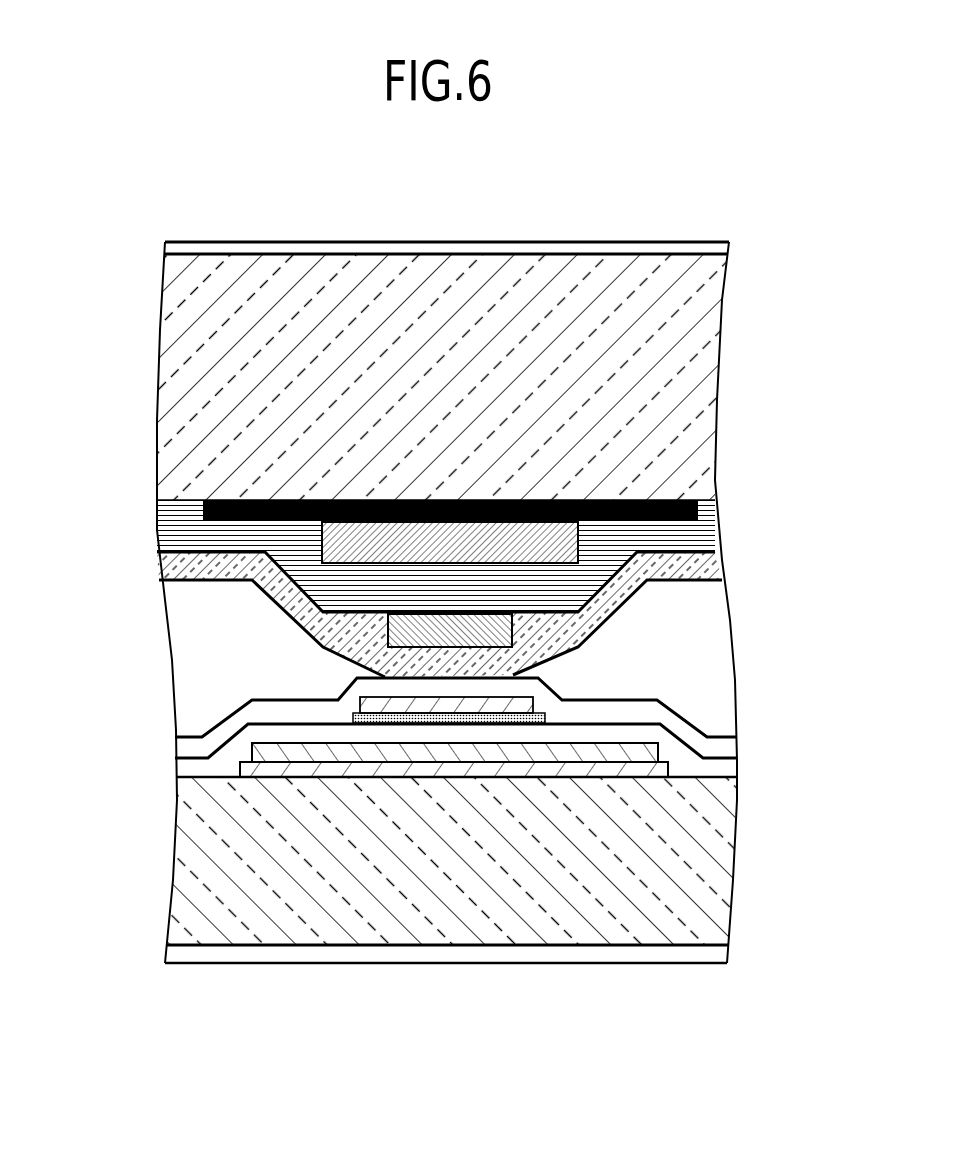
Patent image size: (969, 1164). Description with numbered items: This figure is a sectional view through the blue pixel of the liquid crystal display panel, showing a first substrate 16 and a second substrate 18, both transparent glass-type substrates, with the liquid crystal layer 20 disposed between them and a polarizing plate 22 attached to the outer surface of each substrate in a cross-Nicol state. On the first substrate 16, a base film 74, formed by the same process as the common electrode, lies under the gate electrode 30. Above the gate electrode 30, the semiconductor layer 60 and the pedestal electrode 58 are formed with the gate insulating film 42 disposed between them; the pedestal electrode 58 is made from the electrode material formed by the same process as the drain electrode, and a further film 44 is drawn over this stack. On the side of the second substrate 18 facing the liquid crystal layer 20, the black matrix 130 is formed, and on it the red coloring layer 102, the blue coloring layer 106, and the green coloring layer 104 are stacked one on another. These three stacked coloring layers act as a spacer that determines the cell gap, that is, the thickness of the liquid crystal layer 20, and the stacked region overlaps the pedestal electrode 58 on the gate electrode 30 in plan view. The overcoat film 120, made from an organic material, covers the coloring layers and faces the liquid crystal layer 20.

The first substrate 16 is at (705, 858).
The second substrate 18 is at (491, 268).
The liquid crystal layer 20 is at (710, 655).
The polarizing plate 22 is at (376, 248).
The gate electrode 30 is at (345, 752).
The gate insulating film 42 is at (540, 735).
The passivation layer 44 is at (615, 710).
The pedestal electrode 58 is at (415, 703).
The semiconductor layer 60 is at (470, 718).
The base film 74 is at (275, 768).
The red coloring layer 102 is at (355, 540).
The green coloring layer 104 is at (423, 633).
The blue coloring layer 106 is at (350, 588).
The overcoat film 120 is at (718, 565).
The black matrix 130 is at (718, 512).